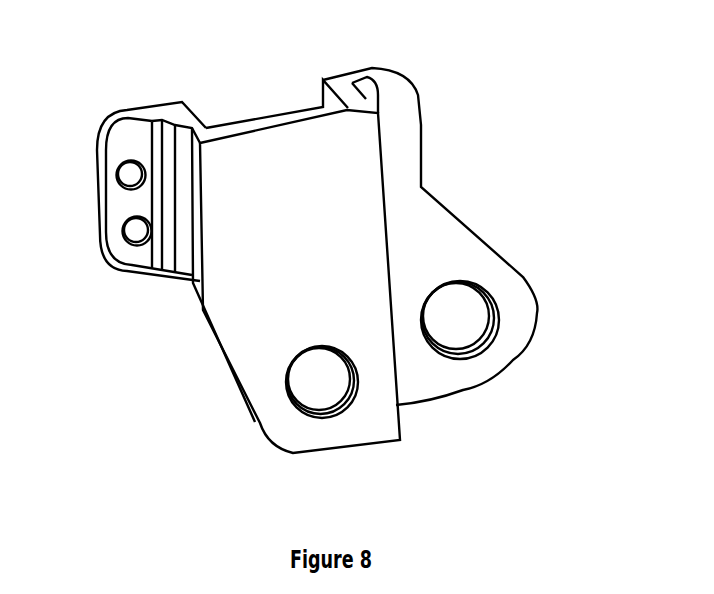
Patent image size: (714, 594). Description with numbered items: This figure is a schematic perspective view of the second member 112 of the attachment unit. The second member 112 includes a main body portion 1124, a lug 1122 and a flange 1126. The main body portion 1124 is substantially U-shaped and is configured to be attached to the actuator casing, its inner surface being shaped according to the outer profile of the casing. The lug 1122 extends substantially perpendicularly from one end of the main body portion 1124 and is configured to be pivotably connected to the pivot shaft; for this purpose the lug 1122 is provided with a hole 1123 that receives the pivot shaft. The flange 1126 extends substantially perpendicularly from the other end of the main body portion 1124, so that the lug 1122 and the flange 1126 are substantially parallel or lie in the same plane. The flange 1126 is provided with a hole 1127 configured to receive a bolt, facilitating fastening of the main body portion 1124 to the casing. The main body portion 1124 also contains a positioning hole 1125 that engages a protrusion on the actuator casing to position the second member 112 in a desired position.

The second member 112 is at (337, 246).
The lug 1122 is at (383, 137).
The hole 1123 is at (460, 335).
The main body portion 1124 is at (267, 160).
The positioning hole 1125 is at (310, 387).
The flange 1126 is at (145, 253).
The hole 1127 is at (125, 178).